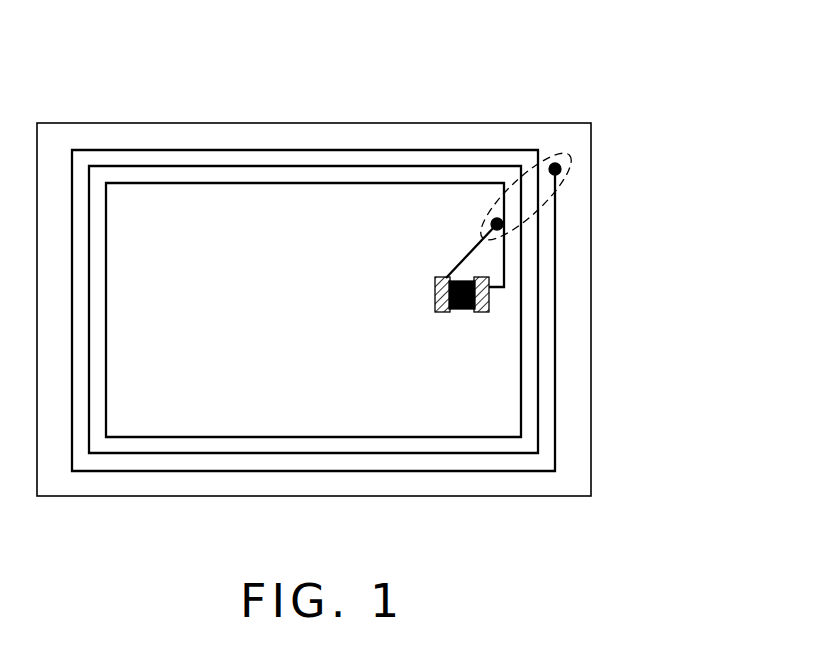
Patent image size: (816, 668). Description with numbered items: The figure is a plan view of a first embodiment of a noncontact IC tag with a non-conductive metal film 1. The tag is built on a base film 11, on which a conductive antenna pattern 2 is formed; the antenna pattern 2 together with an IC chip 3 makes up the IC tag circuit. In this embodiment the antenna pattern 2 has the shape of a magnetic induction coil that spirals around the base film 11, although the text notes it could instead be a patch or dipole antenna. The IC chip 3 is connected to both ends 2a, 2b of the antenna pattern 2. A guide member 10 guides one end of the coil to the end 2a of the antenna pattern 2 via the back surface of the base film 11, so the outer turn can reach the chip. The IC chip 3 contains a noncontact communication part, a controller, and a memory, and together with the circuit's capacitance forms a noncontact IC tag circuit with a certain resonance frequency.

The noncontact IC tag with a non-conductive metal film 1 is at (383, 108).
The antenna pattern 2 is at (200, 481).
The end of the antenna pattern 2a is at (435, 301).
The end of the antenna pattern 2b is at (477, 313).
The IC chip 3 is at (462, 313).
The guide member 10 is at (562, 184).
The base film 11 is at (480, 497).